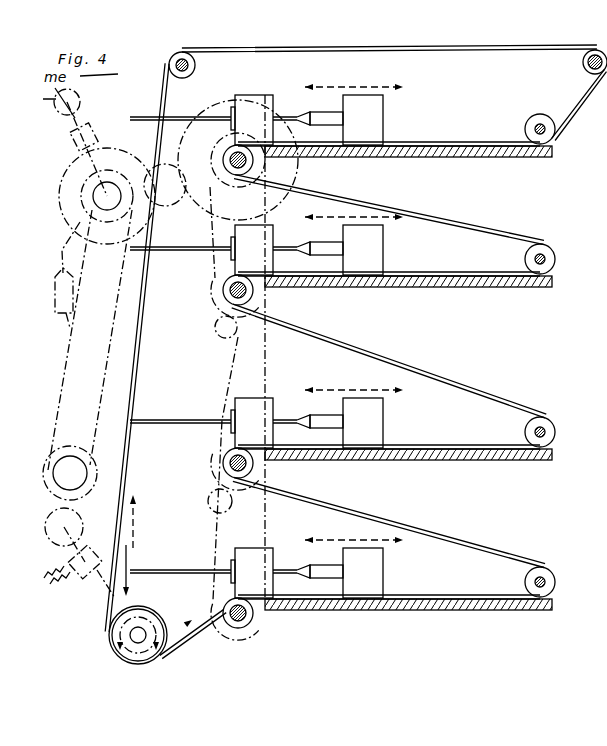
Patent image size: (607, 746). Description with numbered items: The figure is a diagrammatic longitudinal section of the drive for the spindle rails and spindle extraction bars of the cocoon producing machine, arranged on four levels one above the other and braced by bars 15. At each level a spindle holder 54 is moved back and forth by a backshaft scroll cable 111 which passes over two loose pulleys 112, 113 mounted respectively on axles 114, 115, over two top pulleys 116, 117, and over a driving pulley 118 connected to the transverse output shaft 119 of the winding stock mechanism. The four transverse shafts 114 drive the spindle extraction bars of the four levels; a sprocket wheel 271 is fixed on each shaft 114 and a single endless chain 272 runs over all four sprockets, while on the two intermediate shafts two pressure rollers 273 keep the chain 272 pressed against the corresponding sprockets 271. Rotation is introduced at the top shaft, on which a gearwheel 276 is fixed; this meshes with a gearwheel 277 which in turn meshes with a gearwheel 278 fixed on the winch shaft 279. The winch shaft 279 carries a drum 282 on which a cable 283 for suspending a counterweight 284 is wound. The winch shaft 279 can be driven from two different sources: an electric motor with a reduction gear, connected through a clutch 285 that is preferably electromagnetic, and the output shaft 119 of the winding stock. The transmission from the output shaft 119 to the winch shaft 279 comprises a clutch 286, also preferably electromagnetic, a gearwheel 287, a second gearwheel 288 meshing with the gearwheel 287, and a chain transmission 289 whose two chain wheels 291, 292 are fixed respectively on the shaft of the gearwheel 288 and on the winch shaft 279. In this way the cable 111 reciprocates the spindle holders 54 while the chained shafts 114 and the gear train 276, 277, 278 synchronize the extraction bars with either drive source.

The bar 15 is at (263, 95).
The spindle holder 54 is at (372, 128).
The backshaft scroll cable 111 is at (340, 507).
The loose pulley 112 is at (250, 465).
The loose pulley 113 is at (550, 431).
The transverse shaft 114 is at (232, 156).
The axle 115 is at (553, 443).
The top pulley 116 is at (583, 72).
The top pulley 117 is at (193, 68).
The driving pulley 118 is at (110, 633).
The output shaft 119 is at (134, 637).
The sprocket wheel 271 is at (218, 209).
The endless chain 272 is at (212, 259).
The pressure roller 273 is at (215, 327).
The gearwheel 276 is at (298, 184).
The gearwheel 277 is at (157, 163).
The gearwheel 278 is at (112, 160).
The winch shaft 279 is at (75, 146).
The drum 282 is at (78, 238).
The cable 283 is at (60, 212).
The counterweight 284 is at (73, 303).
The clutch 285 is at (80, 108).
The clutch 286 is at (99, 549).
The gearwheel 287 is at (80, 528).
The gearwheel 288 is at (100, 477).
The chain transmission 289 is at (72, 347).
The chain wheel 291 is at (78, 453).
The chain wheel 292 is at (118, 218).